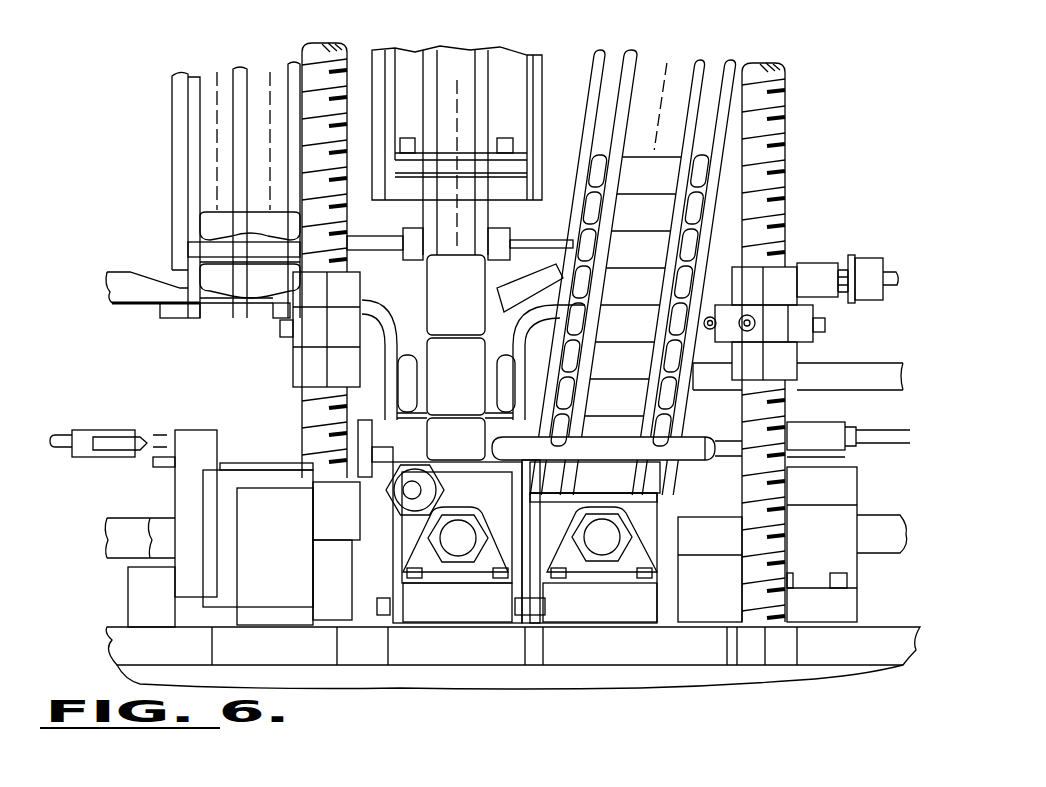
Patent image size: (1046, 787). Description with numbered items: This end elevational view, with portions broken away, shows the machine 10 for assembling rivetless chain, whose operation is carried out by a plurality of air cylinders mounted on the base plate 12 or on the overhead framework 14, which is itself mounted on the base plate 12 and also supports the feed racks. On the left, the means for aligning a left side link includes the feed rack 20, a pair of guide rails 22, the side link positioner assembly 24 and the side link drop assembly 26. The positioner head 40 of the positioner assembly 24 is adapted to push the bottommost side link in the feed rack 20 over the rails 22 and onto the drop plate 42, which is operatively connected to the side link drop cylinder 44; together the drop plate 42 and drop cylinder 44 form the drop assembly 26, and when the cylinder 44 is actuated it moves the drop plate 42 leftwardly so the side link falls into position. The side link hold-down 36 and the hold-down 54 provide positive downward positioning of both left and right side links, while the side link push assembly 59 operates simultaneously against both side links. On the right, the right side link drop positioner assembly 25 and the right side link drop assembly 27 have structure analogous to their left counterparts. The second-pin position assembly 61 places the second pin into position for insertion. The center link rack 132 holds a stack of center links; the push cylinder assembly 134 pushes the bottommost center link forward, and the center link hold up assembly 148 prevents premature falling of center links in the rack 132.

The machine for assembling rivetless chain 10 is at (165, 362).
The base plate 12 is at (878, 627).
The overhead framework 14 is at (789, 129).
The feed rack 20 is at (197, 249).
The guide rails 22 is at (390, 340).
The side link positioner assembly 24 is at (128, 300).
The right side link drop positioner assembly 25 is at (861, 257).
The side link drop assembly 26 is at (272, 461).
The right side link drop assembly 27 is at (843, 449).
The side link hold-down 36 is at (516, 229).
The positioner head 40 is at (111, 268).
The drop plate 42 is at (233, 440).
The side link drop cylinder 44 is at (98, 432).
The side link hold-down 54 is at (500, 266).
The side link push assembly 59 is at (400, 492).
The pin 2 position assembly 61 is at (584, 573).
The center link rack 132 is at (486, 68).
The push cylinder assembly 134 is at (440, 576).
The center link hold up assembly 148 is at (697, 452).